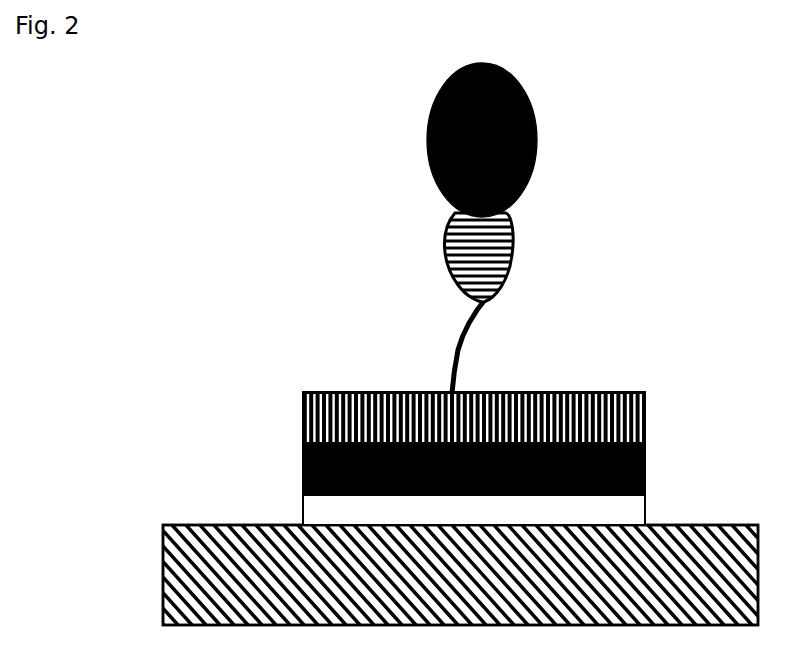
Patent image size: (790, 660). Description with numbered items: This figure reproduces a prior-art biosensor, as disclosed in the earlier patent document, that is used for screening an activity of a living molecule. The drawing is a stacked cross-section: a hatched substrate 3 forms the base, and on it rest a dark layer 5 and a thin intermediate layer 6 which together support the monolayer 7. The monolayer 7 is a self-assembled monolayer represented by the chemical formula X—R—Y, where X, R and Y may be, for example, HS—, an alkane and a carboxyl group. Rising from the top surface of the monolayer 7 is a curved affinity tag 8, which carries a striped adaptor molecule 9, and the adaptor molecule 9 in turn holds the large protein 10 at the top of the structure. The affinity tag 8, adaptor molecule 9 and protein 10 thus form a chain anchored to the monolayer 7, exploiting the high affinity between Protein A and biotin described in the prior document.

The substrate 3 is at (178, 573).
The metal layer 5 is at (303, 471).
The adhesion layer 6 is at (320, 508).
The monolayer 7 is at (303, 405).
The affinity tag 8 is at (457, 342).
The adaptor molecule 9 is at (453, 275).
The protein 10 is at (430, 161).